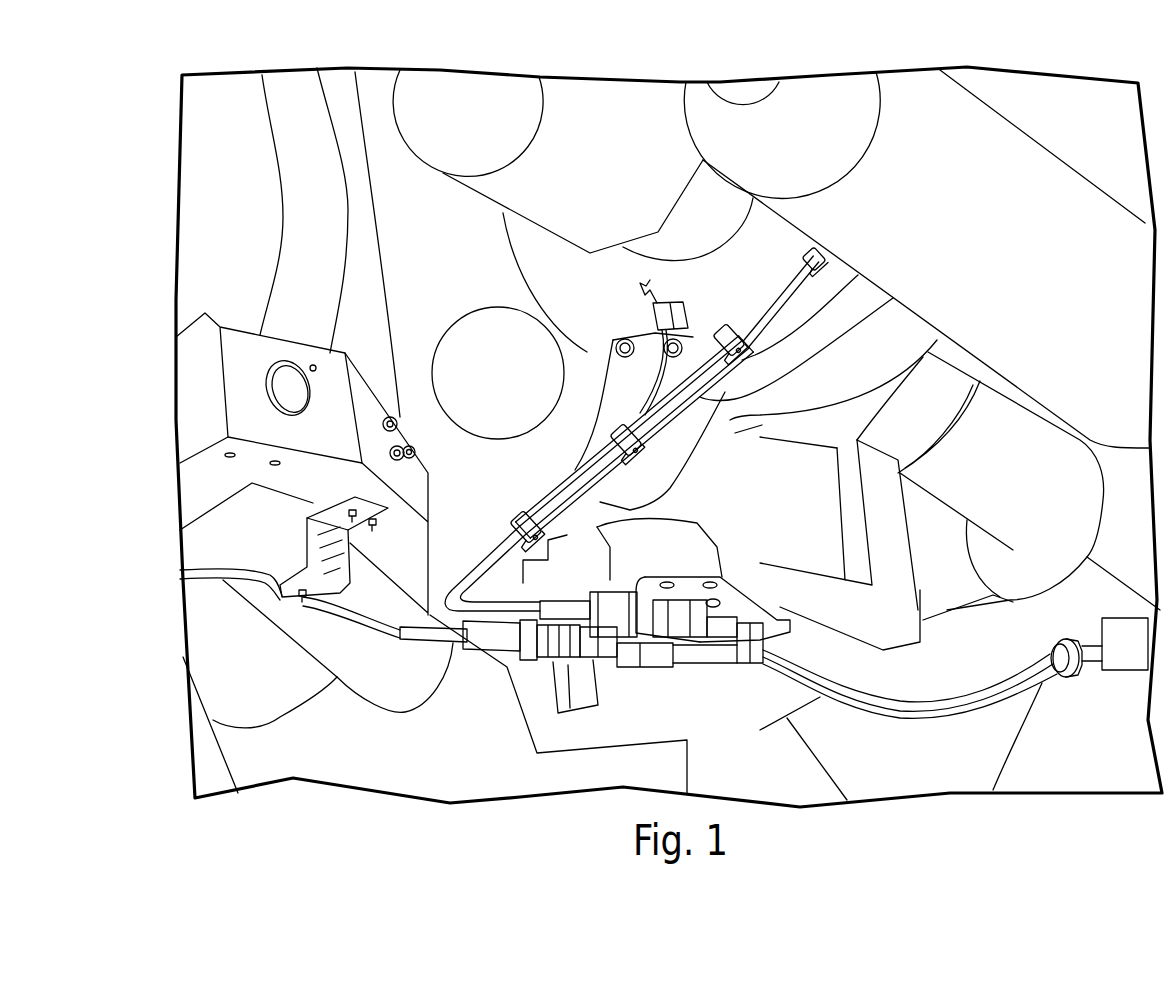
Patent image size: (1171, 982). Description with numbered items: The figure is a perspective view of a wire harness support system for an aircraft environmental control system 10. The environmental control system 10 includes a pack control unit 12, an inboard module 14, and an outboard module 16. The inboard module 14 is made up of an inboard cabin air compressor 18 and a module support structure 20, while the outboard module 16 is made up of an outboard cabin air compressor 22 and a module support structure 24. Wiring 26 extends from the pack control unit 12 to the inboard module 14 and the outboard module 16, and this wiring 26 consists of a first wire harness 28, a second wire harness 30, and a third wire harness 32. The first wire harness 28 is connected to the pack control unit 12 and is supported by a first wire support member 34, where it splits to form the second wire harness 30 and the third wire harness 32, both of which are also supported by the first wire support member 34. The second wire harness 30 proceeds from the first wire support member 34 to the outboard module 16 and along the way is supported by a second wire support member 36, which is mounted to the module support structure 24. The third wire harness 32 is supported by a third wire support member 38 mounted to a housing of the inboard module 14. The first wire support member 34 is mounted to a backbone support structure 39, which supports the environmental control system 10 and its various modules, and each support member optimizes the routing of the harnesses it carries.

The environmental control system 10 is at (567, 70).
The pack control unit 12 is at (1130, 660).
The inboard module 14 is at (799, 372).
The outboard module 16 is at (177, 182).
The inboard cabin air compressor 18 is at (703, 220).
The module support structure 20 is at (680, 448).
The outboard cabin air compressor 22 is at (305, 142).
The module support structure 24 is at (207, 397).
The wiring 26 is at (924, 726).
The first wire harness 28 is at (975, 695).
The second wire harness 30 is at (203, 570).
The third wire harness 32 is at (563, 483).
The first wire support member 34 is at (760, 600).
The second wire support member 36 is at (318, 547).
The third wire support member 38 is at (628, 378).
The backbone support structure 39 is at (743, 563).